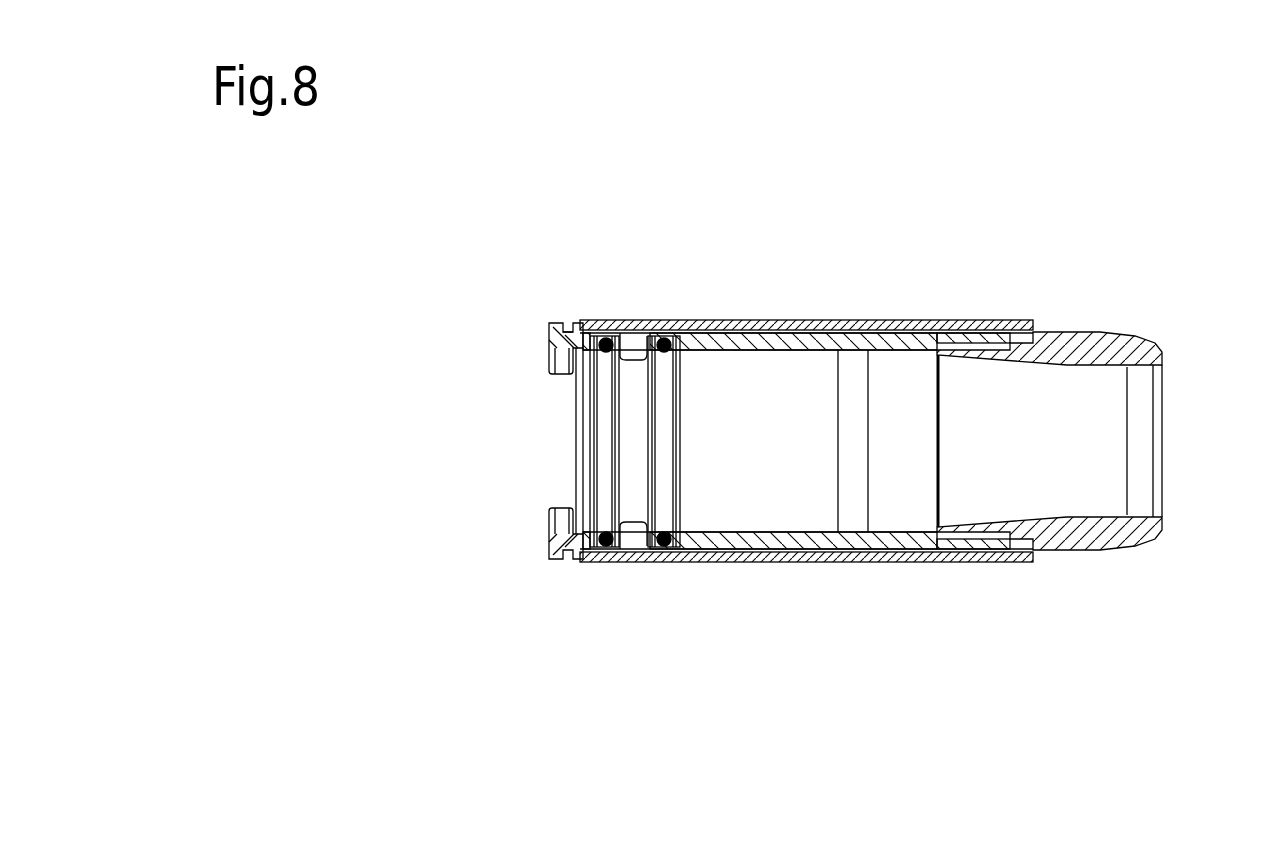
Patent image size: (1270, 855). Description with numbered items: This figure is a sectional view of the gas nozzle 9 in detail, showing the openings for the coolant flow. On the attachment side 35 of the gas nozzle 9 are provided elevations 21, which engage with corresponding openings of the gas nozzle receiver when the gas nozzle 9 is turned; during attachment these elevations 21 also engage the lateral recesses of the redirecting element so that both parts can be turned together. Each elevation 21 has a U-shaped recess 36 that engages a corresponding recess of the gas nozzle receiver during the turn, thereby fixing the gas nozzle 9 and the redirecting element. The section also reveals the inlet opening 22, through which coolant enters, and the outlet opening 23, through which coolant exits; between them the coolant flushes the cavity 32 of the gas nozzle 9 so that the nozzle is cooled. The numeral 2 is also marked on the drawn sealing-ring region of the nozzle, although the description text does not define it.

The gas nozzle 9 is at (982, 250).
The sealing rings 2 is at (665, 338).
The elevations 21 is at (553, 340).
The inlet opening 22 is at (643, 357).
The outlet opening 23 is at (630, 530).
The cavity 32 is at (810, 333).
The attachment side 35 is at (493, 517).
The U-shaped recesses 36 is at (567, 332).